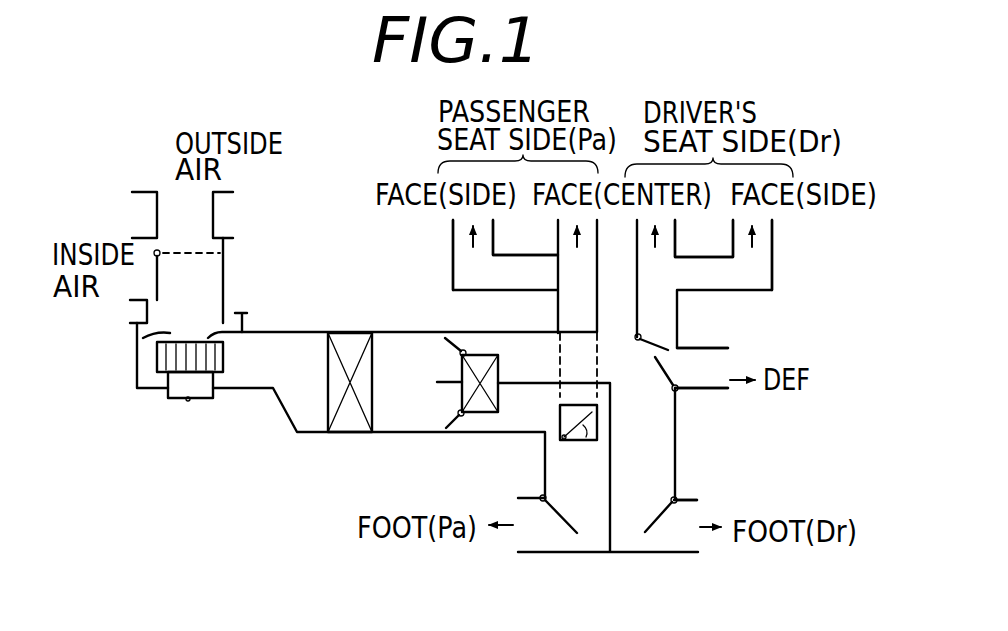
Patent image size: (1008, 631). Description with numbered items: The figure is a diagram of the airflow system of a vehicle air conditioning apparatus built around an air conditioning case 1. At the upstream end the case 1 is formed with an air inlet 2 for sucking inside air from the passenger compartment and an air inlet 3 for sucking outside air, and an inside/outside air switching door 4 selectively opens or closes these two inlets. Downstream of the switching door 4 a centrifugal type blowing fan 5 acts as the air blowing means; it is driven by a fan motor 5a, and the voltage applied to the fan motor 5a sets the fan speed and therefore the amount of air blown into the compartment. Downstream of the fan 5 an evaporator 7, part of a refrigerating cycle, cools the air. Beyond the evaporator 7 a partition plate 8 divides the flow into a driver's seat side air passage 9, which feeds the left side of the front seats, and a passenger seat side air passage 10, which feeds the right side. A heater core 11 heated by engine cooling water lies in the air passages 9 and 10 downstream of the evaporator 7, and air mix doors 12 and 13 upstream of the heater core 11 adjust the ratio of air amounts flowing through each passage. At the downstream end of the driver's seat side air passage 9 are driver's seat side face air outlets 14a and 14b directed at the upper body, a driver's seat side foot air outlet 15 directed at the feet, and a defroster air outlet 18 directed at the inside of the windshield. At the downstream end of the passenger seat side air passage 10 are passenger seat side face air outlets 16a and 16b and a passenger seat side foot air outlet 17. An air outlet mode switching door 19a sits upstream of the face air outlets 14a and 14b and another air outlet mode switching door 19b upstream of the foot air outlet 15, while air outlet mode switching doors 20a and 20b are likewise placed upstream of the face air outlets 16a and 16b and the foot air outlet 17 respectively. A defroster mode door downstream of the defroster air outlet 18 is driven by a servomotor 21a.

The air conditioning case 1 is at (287, 326).
The air inlet 2 is at (140, 277).
The air inlet 3 is at (173, 198).
The inside/outside air switching door 4 is at (157, 290).
The centrifugal type blowing fan 5 is at (155, 365).
The fan motor 5a is at (196, 402).
The evaporator 7 is at (343, 420).
The partition plate 8 is at (513, 375).
The driver's seat side air passage 9 is at (528, 363).
The passenger seat side air passage 10 is at (513, 410).
The heater core 11 is at (462, 365).
The air mix door 12 is at (452, 352).
The air mix door 13 is at (446, 428).
The driver's seat side face air outlet 14a is at (665, 242).
The driver's seat side face air outlet 14b is at (762, 242).
The driver's seat side foot air outlet 15 is at (688, 513).
The passenger seat side face air outlet 16a is at (557, 247).
The passenger seat side face air outlet 16b is at (408, 248).
The passenger seat side foot air outlet 17 is at (540, 538).
The defroster air outlet 18 is at (705, 385).
The air outlet mode switching door 19a is at (655, 345).
The air outlet mode switching door 19b is at (653, 513).
The air outlet mode switching door 20a is at (588, 440).
The air outlet mode switching door 20b is at (565, 528).
The servomotor 21a is at (665, 370).